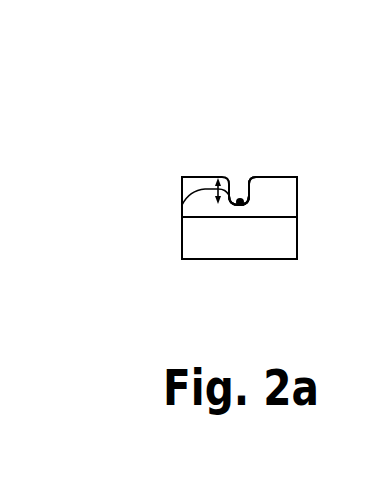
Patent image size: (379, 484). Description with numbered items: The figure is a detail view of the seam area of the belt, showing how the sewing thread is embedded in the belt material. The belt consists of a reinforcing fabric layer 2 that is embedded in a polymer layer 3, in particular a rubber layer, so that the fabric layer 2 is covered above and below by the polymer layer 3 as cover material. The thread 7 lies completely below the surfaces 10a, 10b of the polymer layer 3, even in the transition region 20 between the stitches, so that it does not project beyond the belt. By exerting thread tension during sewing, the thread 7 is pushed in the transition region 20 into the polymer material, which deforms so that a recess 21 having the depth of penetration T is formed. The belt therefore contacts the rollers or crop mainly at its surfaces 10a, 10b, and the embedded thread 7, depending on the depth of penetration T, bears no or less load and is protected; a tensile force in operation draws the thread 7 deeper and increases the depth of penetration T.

The reinforcing fabric layer 2 is at (220, 217).
The polymer layer 3 is at (182, 206).
The depth of penetration T is at (188, 217).
The surface 10a is at (207, 177).
The surface 10b is at (239, 194).
The transition region 20 is at (248, 168).
The thread 7 is at (243, 201).
The recess 21 is at (243, 206).